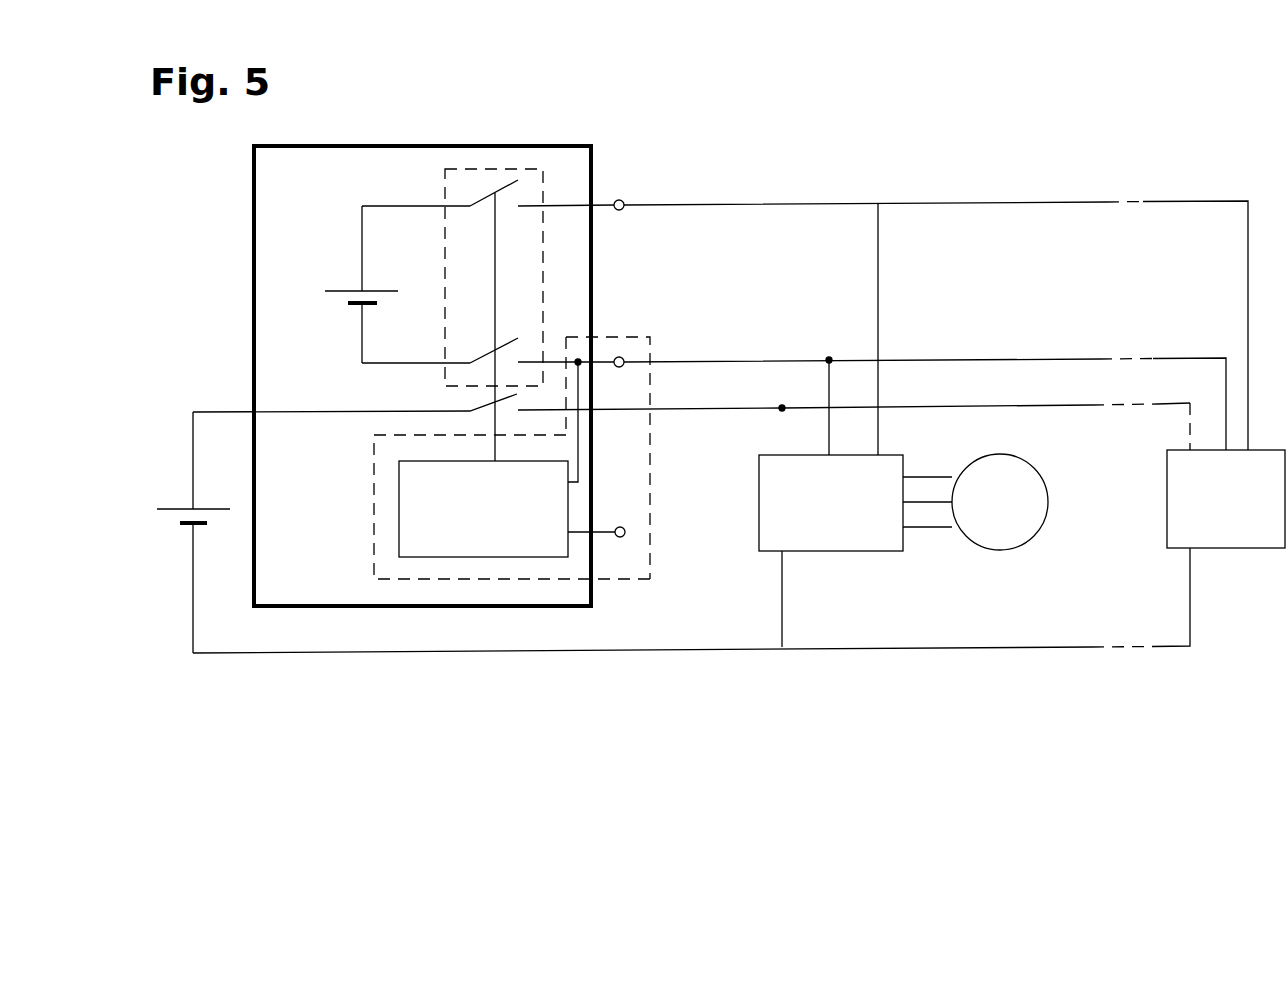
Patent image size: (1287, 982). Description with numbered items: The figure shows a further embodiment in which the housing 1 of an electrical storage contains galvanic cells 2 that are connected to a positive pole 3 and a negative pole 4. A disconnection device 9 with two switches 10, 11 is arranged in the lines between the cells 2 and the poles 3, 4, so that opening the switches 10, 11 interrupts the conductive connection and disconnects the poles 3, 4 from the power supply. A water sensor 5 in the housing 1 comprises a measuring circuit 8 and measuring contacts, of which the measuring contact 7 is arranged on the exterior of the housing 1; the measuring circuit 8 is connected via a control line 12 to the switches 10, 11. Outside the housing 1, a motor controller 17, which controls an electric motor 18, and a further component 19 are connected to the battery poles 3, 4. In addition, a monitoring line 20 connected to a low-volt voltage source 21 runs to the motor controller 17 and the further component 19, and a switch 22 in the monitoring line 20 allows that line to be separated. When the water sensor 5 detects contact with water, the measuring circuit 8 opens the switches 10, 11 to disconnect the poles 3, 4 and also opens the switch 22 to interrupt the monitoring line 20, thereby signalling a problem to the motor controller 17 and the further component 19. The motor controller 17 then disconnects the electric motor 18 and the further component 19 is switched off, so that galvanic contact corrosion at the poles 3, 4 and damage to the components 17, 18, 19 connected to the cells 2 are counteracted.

The housing 1 is at (253, 385).
The cells 2 is at (348, 304).
The positive pole 3 is at (622, 200).
The negative pole 4 is at (622, 358).
The water sensor 5 is at (493, 582).
The measuring contact 7 is at (627, 534).
The measuring circuit 8 is at (472, 523).
The disconnection device 9 is at (445, 168).
The switch 10 is at (502, 187).
The switch 11 is at (510, 340).
The control line 12 is at (495, 287).
The motor controller 17 is at (855, 503).
The electric motor 18 is at (1000, 502).
The further component 19 is at (1226, 499).
The monitoring line 20 is at (655, 651).
The low-volt voltage source 21 is at (178, 523).
The switch 22 is at (508, 398).